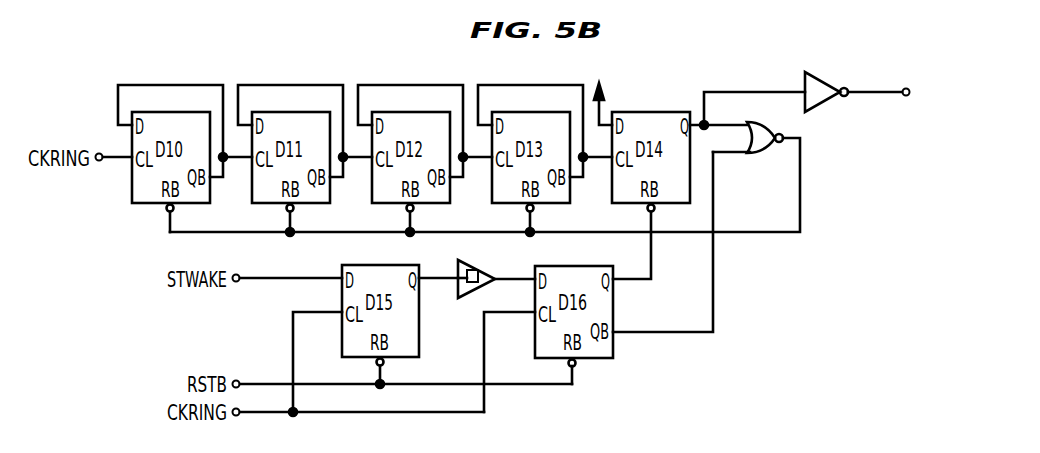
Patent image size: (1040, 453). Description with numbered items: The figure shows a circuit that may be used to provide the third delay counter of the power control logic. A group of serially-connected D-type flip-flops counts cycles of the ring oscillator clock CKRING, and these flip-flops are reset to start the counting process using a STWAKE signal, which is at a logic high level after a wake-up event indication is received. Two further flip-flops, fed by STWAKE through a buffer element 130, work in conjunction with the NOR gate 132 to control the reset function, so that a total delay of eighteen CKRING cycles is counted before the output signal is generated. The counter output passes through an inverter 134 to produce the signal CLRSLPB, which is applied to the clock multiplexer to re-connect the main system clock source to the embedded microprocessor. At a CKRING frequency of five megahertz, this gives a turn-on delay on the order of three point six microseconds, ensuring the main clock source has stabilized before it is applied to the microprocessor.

The delay buffer 130 is at (470, 299).
The NOR gate 132 is at (758, 155).
The inverter 134 is at (823, 82).